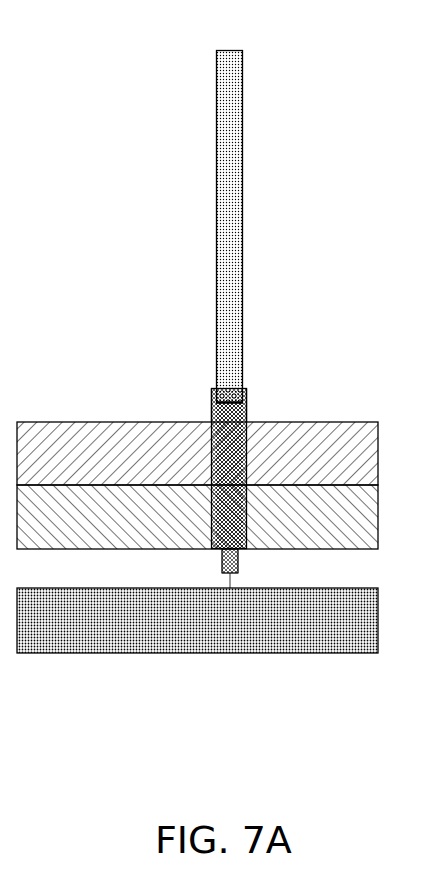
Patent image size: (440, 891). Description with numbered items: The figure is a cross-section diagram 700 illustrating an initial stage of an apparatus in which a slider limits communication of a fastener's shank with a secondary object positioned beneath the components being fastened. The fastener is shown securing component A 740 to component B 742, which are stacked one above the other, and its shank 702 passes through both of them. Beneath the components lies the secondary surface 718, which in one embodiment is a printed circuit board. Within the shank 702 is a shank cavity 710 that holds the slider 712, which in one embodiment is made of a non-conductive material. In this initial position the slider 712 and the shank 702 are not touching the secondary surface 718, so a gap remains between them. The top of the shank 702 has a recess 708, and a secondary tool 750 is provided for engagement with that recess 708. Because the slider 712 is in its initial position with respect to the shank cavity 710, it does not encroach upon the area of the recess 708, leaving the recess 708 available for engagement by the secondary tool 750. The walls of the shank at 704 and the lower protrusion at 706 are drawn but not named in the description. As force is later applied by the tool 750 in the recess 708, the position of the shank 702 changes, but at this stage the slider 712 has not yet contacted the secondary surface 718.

The cross-section diagram 700 is at (85, 727).
The shank 702 is at (214, 447).
The right wall of holder 704 is at (248, 390).
The bottom protrusion of holder 706 is at (239, 552).
The recess 708 is at (211, 390).
The shank cavity 710 is at (222, 437).
The slider 712 is at (230, 573).
The secondary surface 718 is at (107, 653).
The component A 740 is at (378, 437).
The component B 742 is at (378, 497).
The secondary tool 750 is at (215, 228).